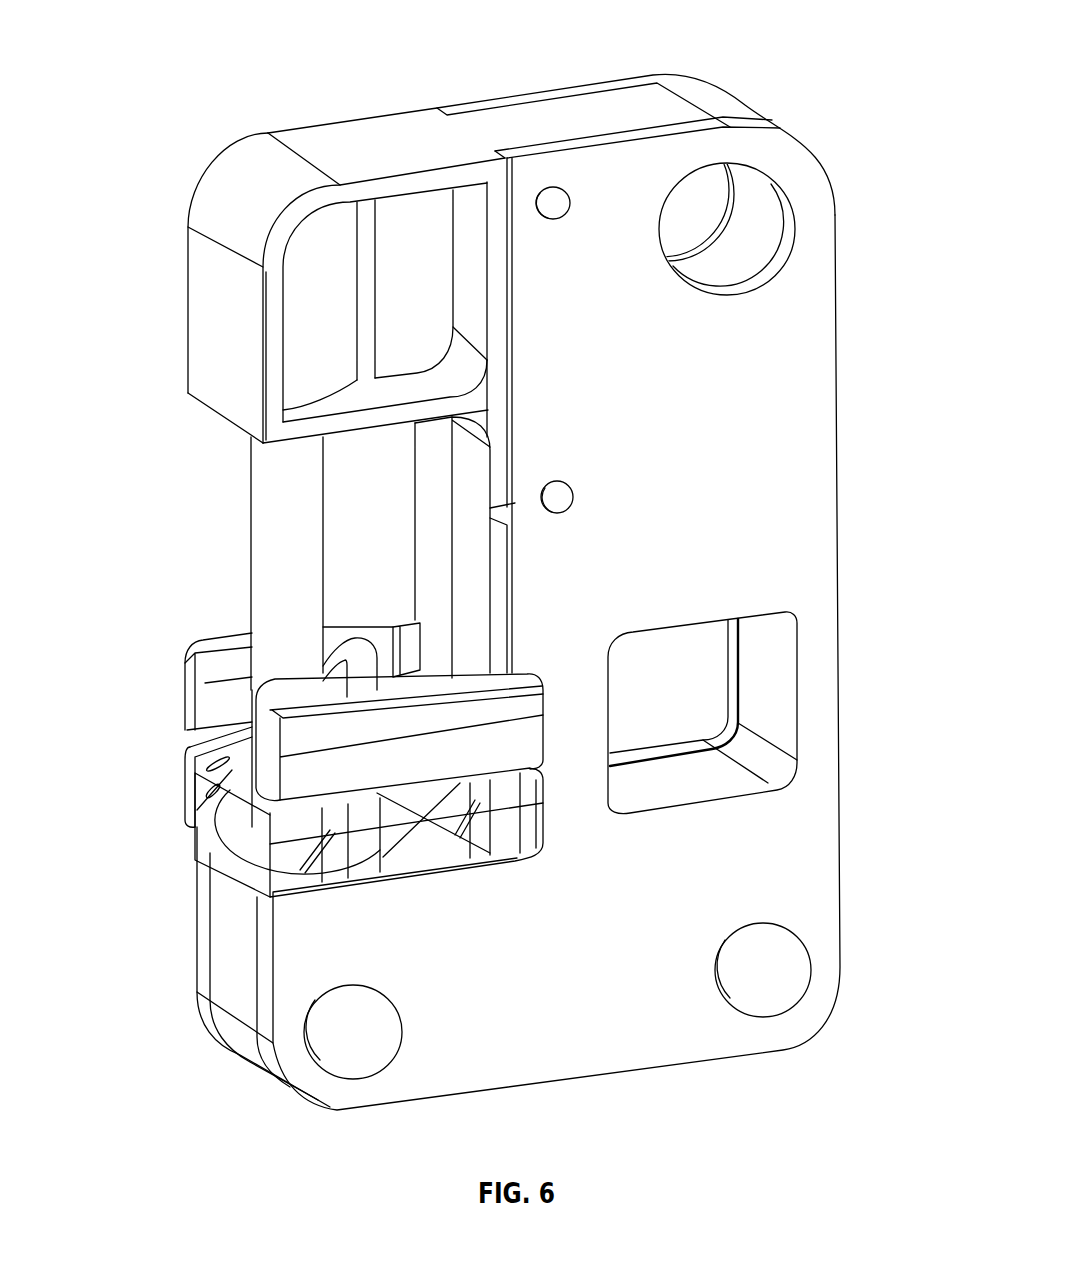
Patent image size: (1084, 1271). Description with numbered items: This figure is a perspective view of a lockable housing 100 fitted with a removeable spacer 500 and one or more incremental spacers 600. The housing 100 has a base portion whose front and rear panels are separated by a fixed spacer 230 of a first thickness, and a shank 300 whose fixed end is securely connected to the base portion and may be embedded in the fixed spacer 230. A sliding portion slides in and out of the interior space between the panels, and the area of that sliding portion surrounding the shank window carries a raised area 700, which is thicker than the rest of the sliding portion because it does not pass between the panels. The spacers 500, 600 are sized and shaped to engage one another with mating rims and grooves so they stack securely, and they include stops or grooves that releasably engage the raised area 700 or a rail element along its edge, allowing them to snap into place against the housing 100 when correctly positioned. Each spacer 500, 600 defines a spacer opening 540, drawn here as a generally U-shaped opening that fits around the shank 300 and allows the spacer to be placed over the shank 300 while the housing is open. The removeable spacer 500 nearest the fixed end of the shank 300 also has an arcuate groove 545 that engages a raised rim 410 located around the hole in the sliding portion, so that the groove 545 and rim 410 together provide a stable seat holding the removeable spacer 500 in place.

The lockable housing 100 is at (829, 63).
The fixed spacer 230 is at (222, 903).
The shank 300 is at (261, 482).
The raised rim 410 is at (240, 817).
The removeable spacer 500 is at (177, 783).
The spacer opening 540 is at (337, 660).
The arcuate groove 545 is at (221, 796).
The incremental spacer 600 is at (177, 675).
The raised area 700 is at (497, 452).